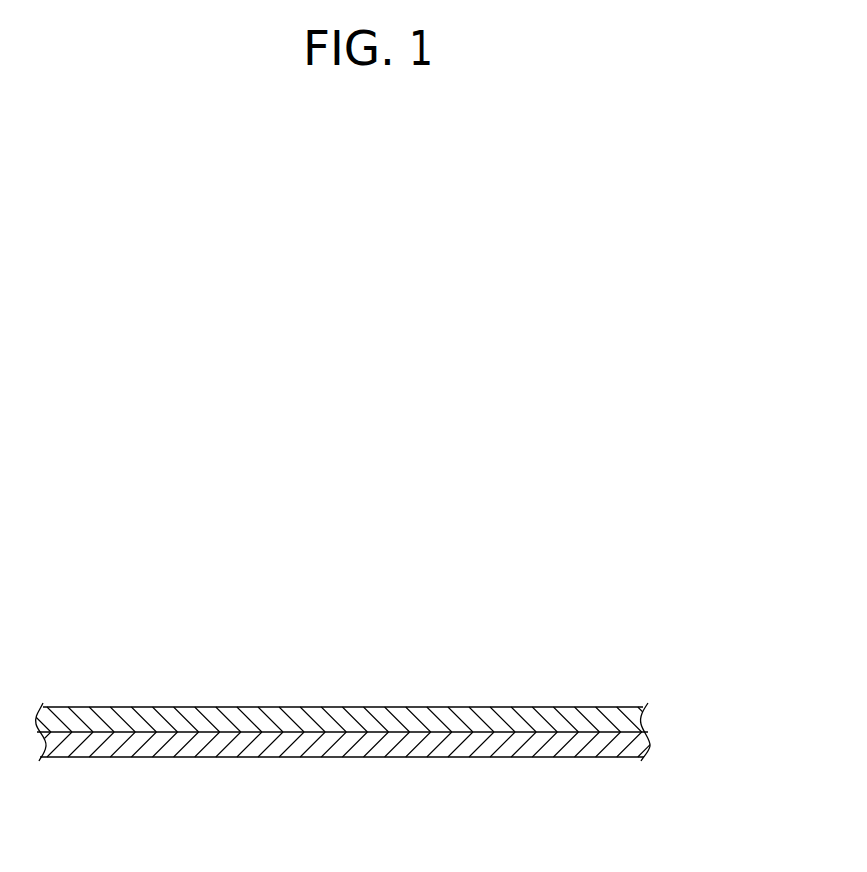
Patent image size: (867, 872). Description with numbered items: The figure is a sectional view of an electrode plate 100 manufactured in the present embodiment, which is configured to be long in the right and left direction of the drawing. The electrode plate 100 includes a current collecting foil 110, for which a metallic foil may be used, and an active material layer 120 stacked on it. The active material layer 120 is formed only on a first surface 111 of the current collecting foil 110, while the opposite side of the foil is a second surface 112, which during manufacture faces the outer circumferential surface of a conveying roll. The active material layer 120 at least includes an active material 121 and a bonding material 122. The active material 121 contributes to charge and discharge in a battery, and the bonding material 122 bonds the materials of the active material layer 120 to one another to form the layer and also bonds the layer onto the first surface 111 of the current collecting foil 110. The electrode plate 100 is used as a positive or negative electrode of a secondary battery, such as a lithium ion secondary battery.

The electrode plate 100 is at (438, 657).
The current collecting foil 110 is at (482, 745).
The first surface 111 is at (606, 732).
The second surface 112 is at (598, 757).
The active material layer 120 is at (222, 726).
The active material 121 is at (334, 687).
The bonding material 122 is at (334, 719).